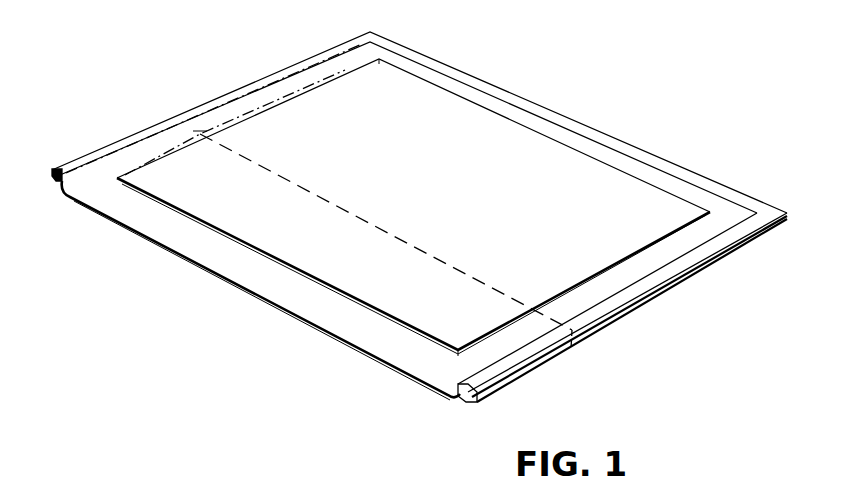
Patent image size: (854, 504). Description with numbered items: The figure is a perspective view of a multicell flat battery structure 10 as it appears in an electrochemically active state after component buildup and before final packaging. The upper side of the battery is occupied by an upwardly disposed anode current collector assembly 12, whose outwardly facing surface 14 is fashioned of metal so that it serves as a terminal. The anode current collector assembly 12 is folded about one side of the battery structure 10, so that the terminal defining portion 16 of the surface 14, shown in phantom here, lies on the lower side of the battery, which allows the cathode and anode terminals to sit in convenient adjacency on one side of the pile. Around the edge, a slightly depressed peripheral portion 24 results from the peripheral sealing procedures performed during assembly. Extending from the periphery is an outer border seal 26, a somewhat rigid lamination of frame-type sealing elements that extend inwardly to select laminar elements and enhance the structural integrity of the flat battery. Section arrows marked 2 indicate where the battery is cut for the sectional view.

The multicell flat battery structure 10 is at (630, 124).
The anode current collector assembly 12 is at (657, 215).
The outwardly facing surface 14 is at (506, 132).
The terminal defining portion 16 is at (571, 349).
The depressed peripheral portion 24 is at (108, 178).
The outer border seal 26 is at (247, 83).
The section line for FIG. 2 is at (499, 226).